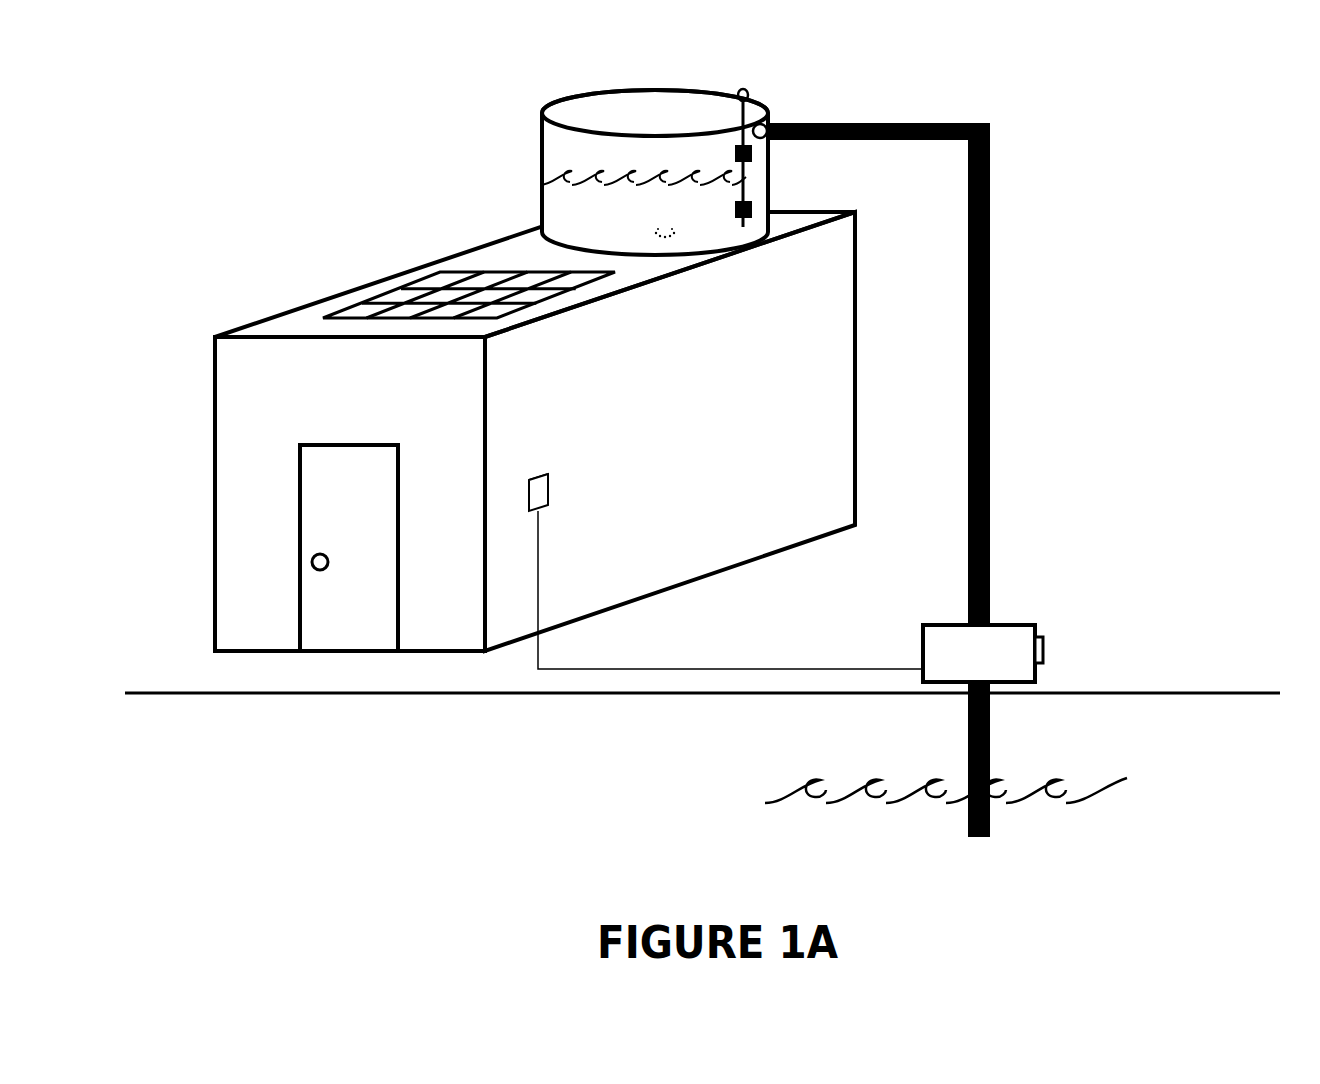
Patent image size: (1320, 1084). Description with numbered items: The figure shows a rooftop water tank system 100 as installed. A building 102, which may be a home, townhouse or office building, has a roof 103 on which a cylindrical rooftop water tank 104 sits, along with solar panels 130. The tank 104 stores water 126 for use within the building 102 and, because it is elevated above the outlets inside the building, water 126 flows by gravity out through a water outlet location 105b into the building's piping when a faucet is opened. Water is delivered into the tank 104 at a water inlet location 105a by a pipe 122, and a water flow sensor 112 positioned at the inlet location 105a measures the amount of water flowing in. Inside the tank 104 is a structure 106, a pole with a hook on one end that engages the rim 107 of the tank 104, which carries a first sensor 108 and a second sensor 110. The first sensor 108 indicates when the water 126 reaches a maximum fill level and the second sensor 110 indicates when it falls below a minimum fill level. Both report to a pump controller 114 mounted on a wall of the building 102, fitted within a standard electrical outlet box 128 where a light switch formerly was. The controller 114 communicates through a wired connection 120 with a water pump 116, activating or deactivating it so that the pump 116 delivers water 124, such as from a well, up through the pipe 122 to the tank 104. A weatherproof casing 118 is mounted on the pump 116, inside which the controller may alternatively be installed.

The rooftop water tank system 100 is at (270, 72).
The building 102 is at (757, 366).
The roof 103 is at (508, 250).
The rooftop water tank 104 is at (538, 188).
The water inlet location 105a is at (770, 125).
The water outlet location 105b is at (685, 218).
The structure 106 is at (758, 128).
The rim 107 is at (592, 93).
The first sensor 108 is at (760, 153).
The second sensor 110 is at (760, 210).
The water flow sensor 112 is at (763, 112).
The pump controller 114 is at (548, 492).
The water pump 116 is at (1015, 640).
The weatherproof casing 118 is at (1043, 648).
The wired connection 120 is at (640, 669).
The pipe 122 is at (992, 395).
The water 124 is at (888, 849).
The water 126 is at (613, 240).
The electrical outlet box 128 is at (540, 478).
The solar panels 130 is at (380, 292).